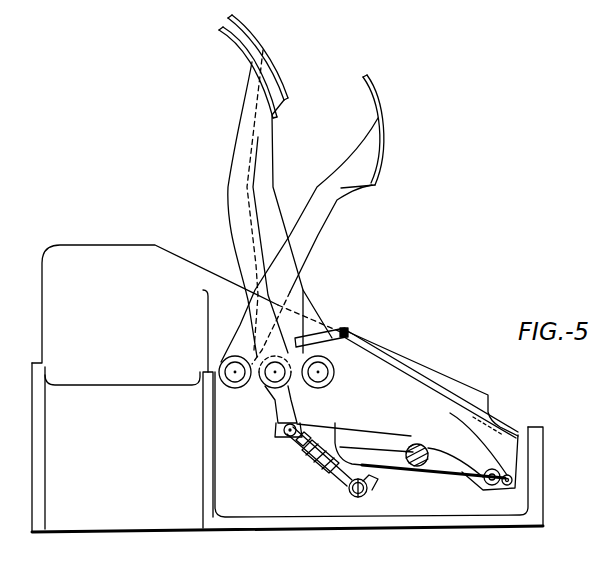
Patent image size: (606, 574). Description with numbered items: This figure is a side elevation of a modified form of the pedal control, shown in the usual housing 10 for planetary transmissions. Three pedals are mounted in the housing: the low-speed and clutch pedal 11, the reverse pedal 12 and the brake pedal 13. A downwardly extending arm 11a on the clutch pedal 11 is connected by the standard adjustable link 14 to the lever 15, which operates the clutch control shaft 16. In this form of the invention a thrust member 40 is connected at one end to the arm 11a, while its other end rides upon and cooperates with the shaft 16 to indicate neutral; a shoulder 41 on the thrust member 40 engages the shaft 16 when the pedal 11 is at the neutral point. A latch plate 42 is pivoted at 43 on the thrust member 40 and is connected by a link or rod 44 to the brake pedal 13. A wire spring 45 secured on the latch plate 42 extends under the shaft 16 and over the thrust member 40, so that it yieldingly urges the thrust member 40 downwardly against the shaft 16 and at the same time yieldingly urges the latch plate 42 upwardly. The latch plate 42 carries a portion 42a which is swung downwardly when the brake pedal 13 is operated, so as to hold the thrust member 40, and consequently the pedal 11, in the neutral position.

The housing 10 is at (90, 253).
The low-speed and clutch pedal 11 is at (236, 178).
The downwardly extending arm 11a is at (279, 410).
The reverse pedal 12 is at (315, 221).
The brake pedal 13 is at (263, 189).
The adjustable link 14 is at (301, 448).
The lever 15 is at (372, 482).
The clutch control shaft 16 is at (427, 464).
The thrust member 40 is at (352, 434).
The shoulder 41 is at (409, 446).
The latch plate 42 is at (510, 467).
The latch plate portion 42a is at (448, 440).
The pivot 43 is at (489, 484).
The link or rod 44 is at (418, 385).
The wire spring 45 is at (400, 467).